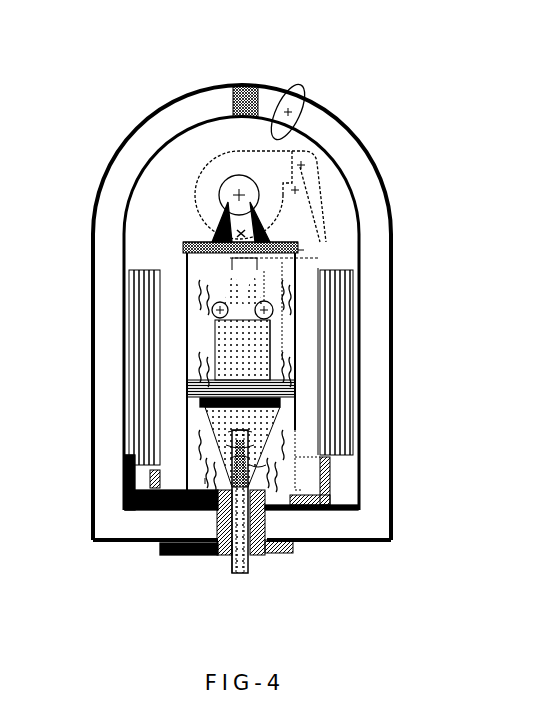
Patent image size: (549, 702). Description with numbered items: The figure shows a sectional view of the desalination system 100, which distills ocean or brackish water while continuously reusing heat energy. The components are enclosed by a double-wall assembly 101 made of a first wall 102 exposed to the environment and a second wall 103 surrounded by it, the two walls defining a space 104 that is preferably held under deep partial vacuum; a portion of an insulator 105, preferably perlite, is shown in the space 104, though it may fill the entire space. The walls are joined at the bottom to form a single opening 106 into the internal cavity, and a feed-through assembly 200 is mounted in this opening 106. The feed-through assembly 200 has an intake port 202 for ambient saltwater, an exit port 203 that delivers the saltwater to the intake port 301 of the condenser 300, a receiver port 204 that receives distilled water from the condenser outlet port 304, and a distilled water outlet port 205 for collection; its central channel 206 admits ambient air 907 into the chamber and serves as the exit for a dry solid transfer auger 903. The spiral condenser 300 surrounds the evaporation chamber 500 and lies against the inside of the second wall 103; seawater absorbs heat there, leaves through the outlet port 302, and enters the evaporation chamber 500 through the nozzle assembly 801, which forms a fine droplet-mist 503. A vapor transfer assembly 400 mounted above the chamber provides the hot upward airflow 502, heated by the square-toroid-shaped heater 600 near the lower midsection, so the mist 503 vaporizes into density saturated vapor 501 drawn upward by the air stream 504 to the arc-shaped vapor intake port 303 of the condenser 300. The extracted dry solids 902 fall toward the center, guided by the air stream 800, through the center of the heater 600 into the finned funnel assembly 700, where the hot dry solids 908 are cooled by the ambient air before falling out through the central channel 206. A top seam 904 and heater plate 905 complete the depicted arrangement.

The desalination system 100 is at (372, 100).
The double-wall assembly 101 is at (298, 88).
The first wall 102 is at (122, 150).
The second wall 103 is at (338, 160).
The space 104 is at (370, 195).
The insulator 105 is at (248, 86).
The opening 106 is at (270, 528).
The feed-through assembly 200 is at (250, 546).
The intake port 202 is at (162, 556).
The exit port 203 is at (200, 502).
The receiver port 204 is at (282, 507).
The distilled water outlet port 205 is at (292, 552).
The central channel 206 is at (231, 562).
The condenser 300 is at (344, 328).
The intake port 301 is at (126, 456).
The outlet port 302 is at (303, 256).
The vapor intake port 303 is at (332, 267).
The outlet port 304 is at (130, 486).
The vapor transfer assembly 400 is at (238, 172).
The evaporation chamber 500 is at (293, 287).
The density saturated vapor 501 is at (282, 310).
The airflow 502 is at (283, 338).
The droplet-mist 503 is at (234, 302).
The air stream 504 is at (215, 215).
The heater 600 is at (188, 385).
The finned funnel assembly 700 is at (152, 466).
The air stream 800 is at (289, 415).
The nozzle assembly 801 is at (218, 276).
The dry solids 902 is at (263, 347).
The dry solid transfer auger 903 is at (257, 467).
The chamber top seam 904 is at (180, 240).
The heater plate 905 is at (199, 402).
The ambient air 907 is at (204, 480).
The dry solids 908 is at (210, 431).